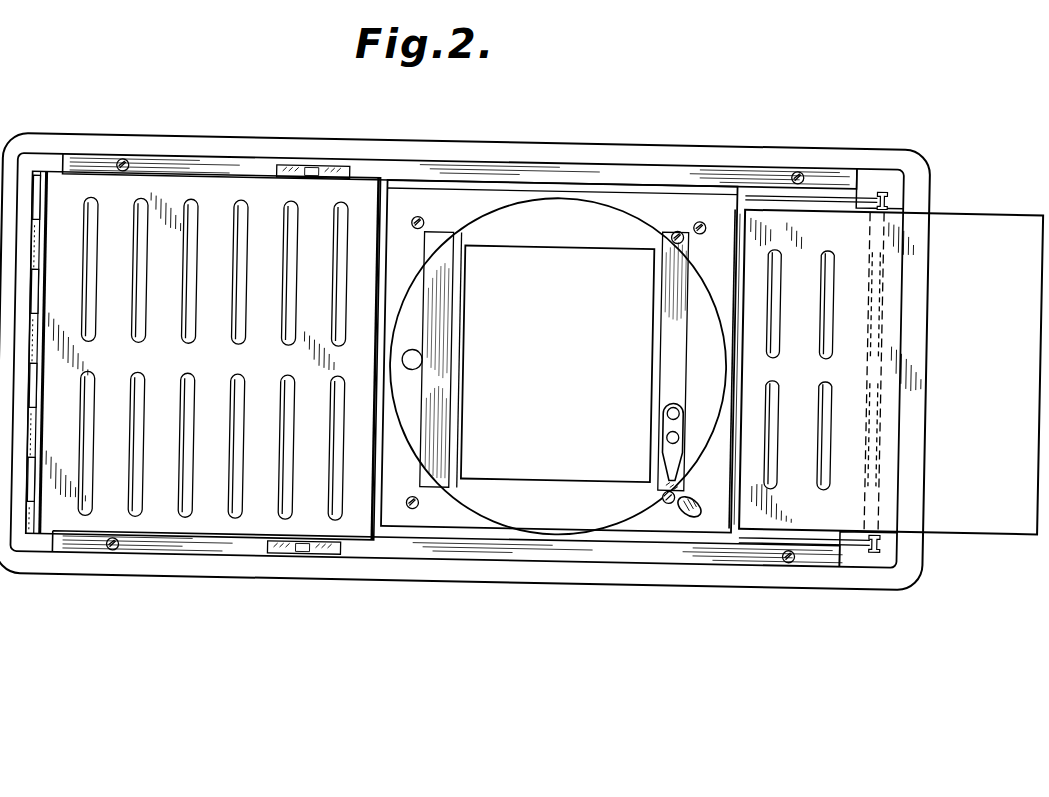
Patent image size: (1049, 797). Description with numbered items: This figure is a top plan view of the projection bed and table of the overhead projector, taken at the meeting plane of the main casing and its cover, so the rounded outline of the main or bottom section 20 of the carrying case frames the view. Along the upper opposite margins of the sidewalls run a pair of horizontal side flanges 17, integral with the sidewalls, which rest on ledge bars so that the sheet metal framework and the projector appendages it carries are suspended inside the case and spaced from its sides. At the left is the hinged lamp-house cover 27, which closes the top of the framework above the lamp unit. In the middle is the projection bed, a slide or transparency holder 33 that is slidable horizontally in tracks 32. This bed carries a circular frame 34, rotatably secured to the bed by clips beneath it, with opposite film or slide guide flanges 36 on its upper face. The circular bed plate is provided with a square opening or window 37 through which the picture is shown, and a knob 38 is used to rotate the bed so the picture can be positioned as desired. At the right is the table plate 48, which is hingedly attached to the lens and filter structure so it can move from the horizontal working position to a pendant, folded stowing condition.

The horizontal side flanges 17 is at (688, 176).
The main or bottom section 20 is at (878, 592).
The hinged lamp-house cover 27 is at (231, 520).
The tracks 32 is at (886, 201).
The slide or transparency holder 33 is at (470, 513).
The circular frame 34 is at (603, 511).
The film or slide guide flanges 36 is at (452, 352).
The square opening or window 37 is at (650, 312).
The knob 38 is at (412, 371).
The table plate 48 is at (985, 358).